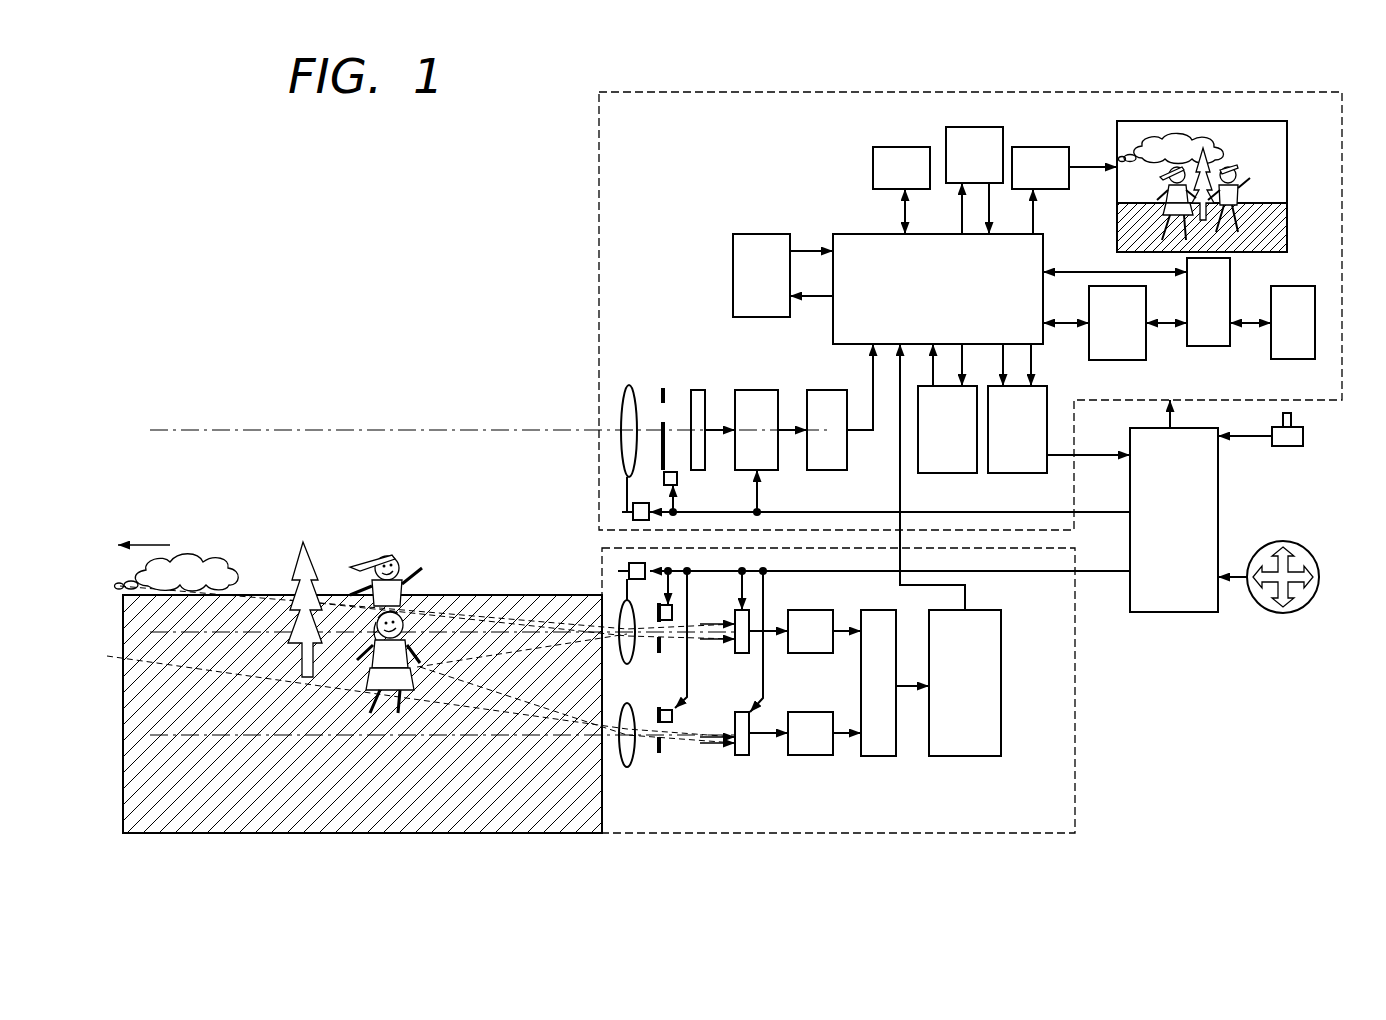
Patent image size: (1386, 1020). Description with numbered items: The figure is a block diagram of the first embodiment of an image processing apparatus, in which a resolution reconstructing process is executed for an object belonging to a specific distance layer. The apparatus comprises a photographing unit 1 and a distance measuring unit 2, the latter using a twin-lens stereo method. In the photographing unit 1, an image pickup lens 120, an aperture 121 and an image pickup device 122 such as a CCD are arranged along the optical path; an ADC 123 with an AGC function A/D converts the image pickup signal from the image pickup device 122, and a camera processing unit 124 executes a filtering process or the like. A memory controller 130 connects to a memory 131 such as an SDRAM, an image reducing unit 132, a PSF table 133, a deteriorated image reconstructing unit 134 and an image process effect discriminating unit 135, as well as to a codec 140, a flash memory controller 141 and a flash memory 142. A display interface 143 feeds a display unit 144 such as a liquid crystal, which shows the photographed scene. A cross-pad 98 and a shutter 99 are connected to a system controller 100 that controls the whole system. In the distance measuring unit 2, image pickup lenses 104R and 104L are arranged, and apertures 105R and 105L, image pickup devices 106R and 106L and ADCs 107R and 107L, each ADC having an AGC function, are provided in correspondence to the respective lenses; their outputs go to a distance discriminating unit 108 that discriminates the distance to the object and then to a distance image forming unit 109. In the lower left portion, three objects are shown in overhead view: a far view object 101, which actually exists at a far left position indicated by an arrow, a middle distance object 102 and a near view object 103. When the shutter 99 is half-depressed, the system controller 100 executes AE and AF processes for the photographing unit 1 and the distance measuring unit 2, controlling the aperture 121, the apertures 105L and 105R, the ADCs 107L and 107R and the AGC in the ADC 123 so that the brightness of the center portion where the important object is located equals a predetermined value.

The photographing unit 1 is at (862, 92).
The distance measuring unit 2 is at (700, 833).
The cross-pad 98 is at (1283, 613).
The shutter 99 is at (1287, 446).
The system controller 100 is at (1173, 612).
The far view object 101 is at (197, 555).
The middle distance object 102 is at (308, 545).
The near view object 103 is at (404, 555).
The image pickup lens 104R is at (623, 601).
The image pickup lens 104L is at (630, 768).
The aperture 105R is at (656, 641).
The aperture 105L is at (666, 743).
The image pickup device 106R is at (737, 655).
The image pickup device 106L is at (742, 757).
The ADC 107R is at (809, 654).
The ADC 107L is at (814, 757).
The distance discriminating unit 108 is at (880, 757).
The distance image forming unit 109 is at (977, 757).
The image pickup lens 120 is at (624, 392).
The aperture 121 is at (661, 400).
The image pickup device 122 is at (698, 390).
The ADC 123 is at (757, 390).
The camera processing unit 124 is at (812, 390).
The memory controller 130 is at (850, 233).
The memory 131 is at (873, 160).
The image reducing unit 132 is at (946, 135).
The PSF table 133 is at (756, 234).
The deteriorated image reconstructing unit 134 is at (968, 473).
The image process effect discriminating unit 135 is at (1000, 473).
The codec 140 is at (1125, 360).
The flash memory controller 141 is at (1207, 346).
The flash memory 142 is at (1300, 286).
The display interface 143 is at (1046, 147).
The display unit 144 is at (1117, 190).